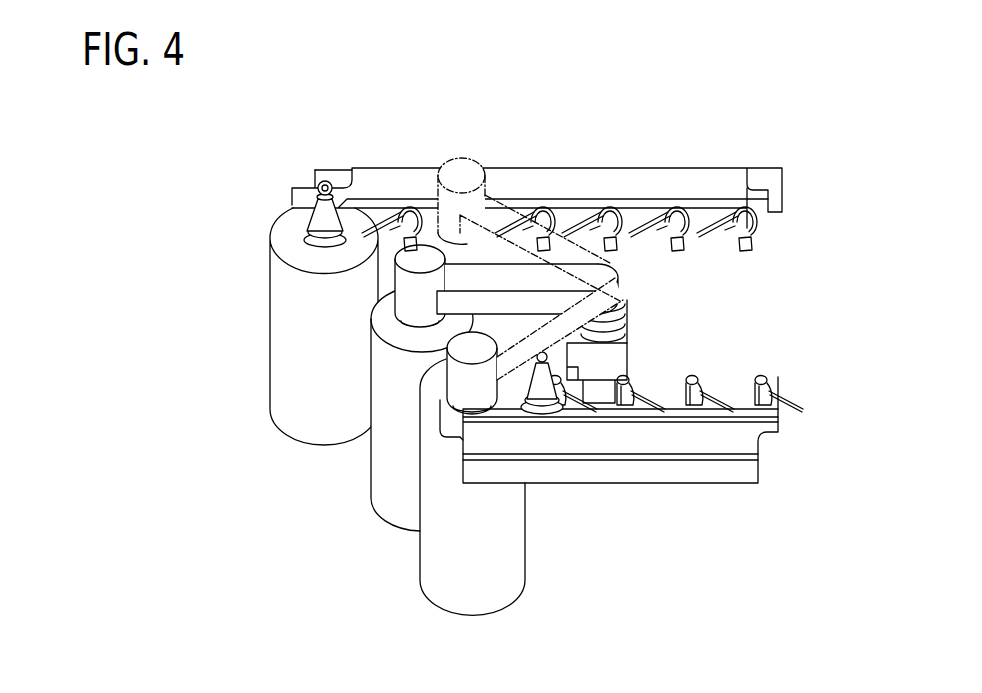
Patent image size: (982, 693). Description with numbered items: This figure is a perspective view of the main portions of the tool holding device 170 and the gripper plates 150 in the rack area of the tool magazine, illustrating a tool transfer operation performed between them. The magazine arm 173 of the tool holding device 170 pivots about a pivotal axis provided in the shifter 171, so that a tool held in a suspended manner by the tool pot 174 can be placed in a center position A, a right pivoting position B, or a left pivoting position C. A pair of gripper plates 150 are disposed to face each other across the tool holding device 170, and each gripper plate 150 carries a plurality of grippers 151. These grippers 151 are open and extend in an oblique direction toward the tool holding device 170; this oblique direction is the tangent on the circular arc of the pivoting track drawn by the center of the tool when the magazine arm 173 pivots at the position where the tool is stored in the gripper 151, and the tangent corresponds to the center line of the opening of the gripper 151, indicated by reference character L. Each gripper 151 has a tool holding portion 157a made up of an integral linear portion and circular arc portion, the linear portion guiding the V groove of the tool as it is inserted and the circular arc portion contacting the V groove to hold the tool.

The gripper plate 150 is at (700, 182).
The gripper 151 is at (582, 247).
The tool holding portion 157a is at (592, 206).
The tool holding device 170 is at (634, 287).
The shifter 171 is at (620, 367).
The magazine arm 173 is at (505, 223).
The tool pot 174 is at (456, 171).
The center position A is at (352, 459).
The right pivoting position B is at (511, 202).
The left pivoting position C is at (397, 563).
The center line of the opening of the gripper L is at (770, 231).